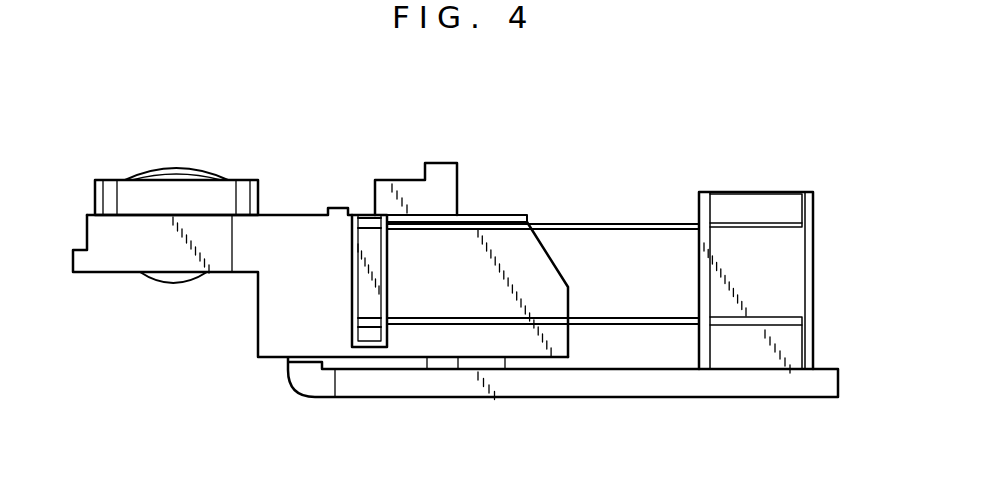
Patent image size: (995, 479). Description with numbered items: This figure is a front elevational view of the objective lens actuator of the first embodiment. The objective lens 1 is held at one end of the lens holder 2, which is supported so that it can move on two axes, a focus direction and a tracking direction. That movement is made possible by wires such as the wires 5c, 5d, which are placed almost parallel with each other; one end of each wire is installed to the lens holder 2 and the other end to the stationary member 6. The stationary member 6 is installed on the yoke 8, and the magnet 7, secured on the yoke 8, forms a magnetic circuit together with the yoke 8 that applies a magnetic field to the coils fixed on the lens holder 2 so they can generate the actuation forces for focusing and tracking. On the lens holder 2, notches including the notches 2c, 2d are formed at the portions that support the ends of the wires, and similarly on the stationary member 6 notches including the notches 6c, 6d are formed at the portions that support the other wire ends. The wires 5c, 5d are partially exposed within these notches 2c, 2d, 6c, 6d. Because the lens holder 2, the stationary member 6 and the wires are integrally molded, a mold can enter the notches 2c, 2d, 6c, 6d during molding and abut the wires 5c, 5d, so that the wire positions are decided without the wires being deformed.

The objective lens 1 is at (175, 197).
The lens holder 2 is at (128, 252).
The notch 2c is at (368, 218).
The notch 2d is at (368, 329).
The wire 5c is at (583, 225).
The wire 5d is at (618, 317).
The stationary member 6 is at (790, 268).
The notch 6c is at (755, 211).
The notch 6d is at (752, 345).
The magnet 7 is at (408, 190).
The yoke 8 is at (597, 388).